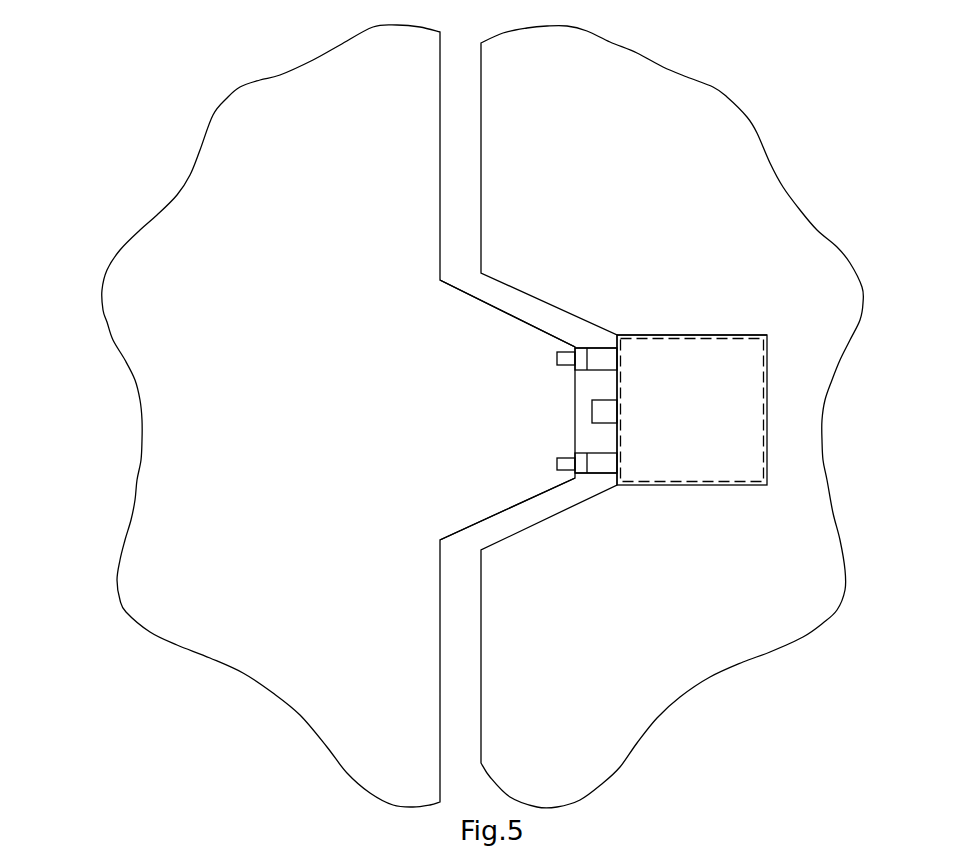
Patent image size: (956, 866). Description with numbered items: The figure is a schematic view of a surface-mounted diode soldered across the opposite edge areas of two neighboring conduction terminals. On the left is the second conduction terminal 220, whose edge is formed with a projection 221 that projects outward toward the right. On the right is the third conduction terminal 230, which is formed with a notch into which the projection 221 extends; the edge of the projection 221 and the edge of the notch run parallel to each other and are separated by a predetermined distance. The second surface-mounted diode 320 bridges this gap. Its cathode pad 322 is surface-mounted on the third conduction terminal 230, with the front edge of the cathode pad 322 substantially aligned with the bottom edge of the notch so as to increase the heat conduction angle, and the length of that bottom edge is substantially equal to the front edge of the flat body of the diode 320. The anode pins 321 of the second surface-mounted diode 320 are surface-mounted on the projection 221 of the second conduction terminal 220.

The second conduction terminal 220 is at (252, 200).
The projection 221 is at (510, 415).
The third conduction terminal 230 is at (753, 197).
The second surface-mounted diode 320 is at (695, 401).
The anode pins 321 is at (565, 358).
The cathode pad 322 is at (693, 335).